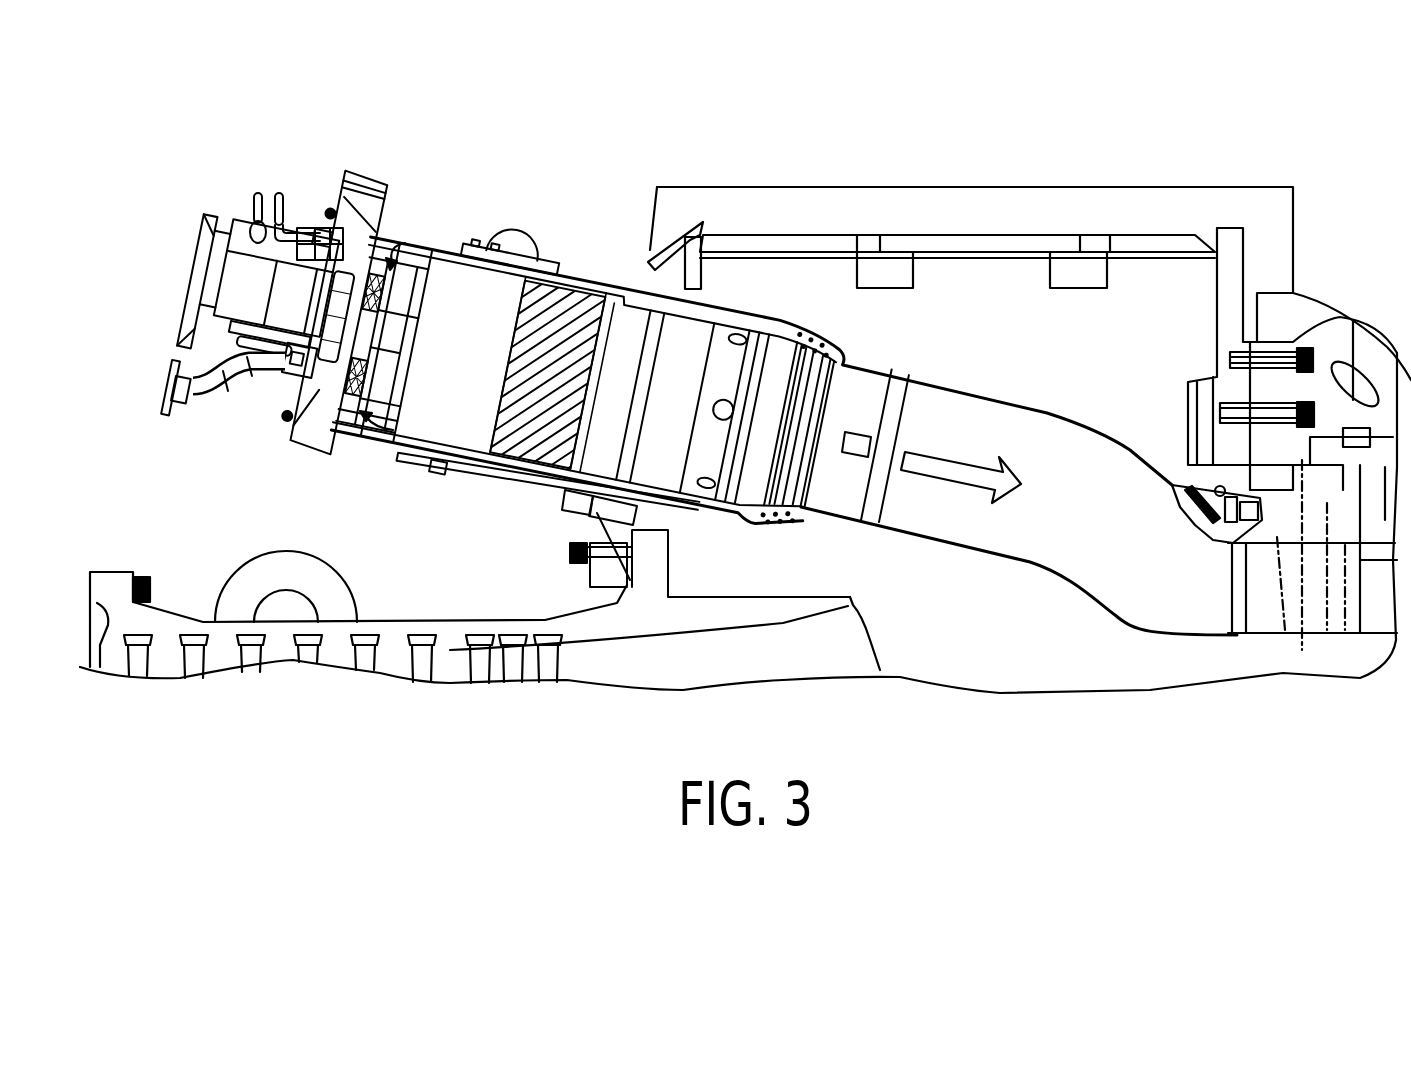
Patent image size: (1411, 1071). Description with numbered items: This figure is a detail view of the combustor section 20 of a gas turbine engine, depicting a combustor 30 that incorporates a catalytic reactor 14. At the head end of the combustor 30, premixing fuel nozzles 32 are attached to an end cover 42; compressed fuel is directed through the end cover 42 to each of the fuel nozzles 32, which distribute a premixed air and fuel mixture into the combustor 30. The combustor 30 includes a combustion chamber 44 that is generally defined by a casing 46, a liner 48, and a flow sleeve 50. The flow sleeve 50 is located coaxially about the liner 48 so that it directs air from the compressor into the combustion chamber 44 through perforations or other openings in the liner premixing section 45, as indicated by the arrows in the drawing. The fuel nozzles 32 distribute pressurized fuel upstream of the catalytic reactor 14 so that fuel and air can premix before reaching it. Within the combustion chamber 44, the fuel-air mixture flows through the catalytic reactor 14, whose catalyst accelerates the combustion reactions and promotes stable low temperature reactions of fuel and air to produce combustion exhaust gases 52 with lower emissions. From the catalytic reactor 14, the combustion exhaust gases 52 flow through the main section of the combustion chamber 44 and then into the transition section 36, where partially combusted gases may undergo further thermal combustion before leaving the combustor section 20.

The combustor section 20 is at (895, 118).
The combustor 30 is at (428, 506).
The premixing fuel nozzles 32 is at (393, 320).
The catalytic reactor 14 is at (532, 430).
The end cover 42 is at (367, 210).
The combustion chamber 44 is at (772, 430).
The liner premixing section 45 is at (430, 405).
The casing 46 is at (583, 272).
The liner 48 is at (657, 480).
The flow sleeve 50 is at (698, 303).
The combustion exhaust gases 52 is at (953, 455).
The transition section 36 is at (1133, 607).